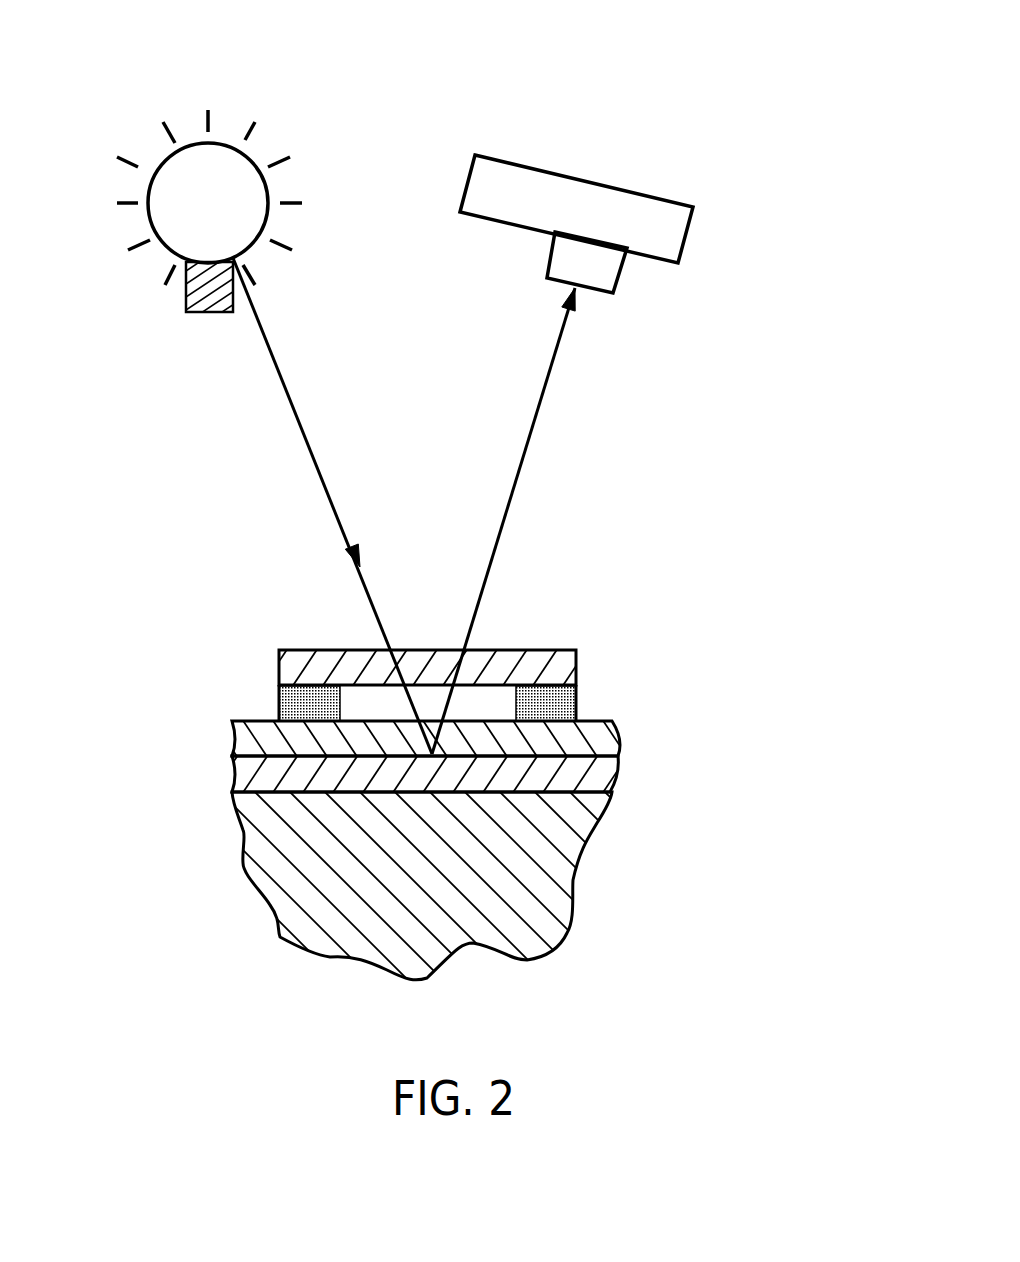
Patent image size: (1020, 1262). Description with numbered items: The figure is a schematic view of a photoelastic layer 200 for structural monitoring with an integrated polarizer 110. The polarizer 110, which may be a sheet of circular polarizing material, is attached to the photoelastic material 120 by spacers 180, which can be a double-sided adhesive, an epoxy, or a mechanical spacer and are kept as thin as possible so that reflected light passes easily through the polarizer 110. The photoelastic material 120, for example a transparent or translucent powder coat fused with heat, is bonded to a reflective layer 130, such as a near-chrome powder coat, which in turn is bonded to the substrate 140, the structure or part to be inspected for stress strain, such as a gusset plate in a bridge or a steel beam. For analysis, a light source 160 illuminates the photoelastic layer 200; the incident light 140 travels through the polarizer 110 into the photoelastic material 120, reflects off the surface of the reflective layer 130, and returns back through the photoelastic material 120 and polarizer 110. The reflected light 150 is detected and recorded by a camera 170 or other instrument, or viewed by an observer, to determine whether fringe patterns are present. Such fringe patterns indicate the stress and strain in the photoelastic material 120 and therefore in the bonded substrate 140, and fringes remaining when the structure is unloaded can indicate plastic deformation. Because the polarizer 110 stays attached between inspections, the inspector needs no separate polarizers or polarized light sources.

The polarizer 110 is at (549, 650).
The photoelastic material 120 is at (618, 728).
The reflective layer 130 is at (615, 770).
The substrate 140 is at (300, 428).
The reflected light 150 is at (543, 395).
The light source 160 is at (218, 145).
The camera 170 is at (538, 168).
The spacer 180 is at (574, 697).
The photoelastic layer 200 is at (262, 617).